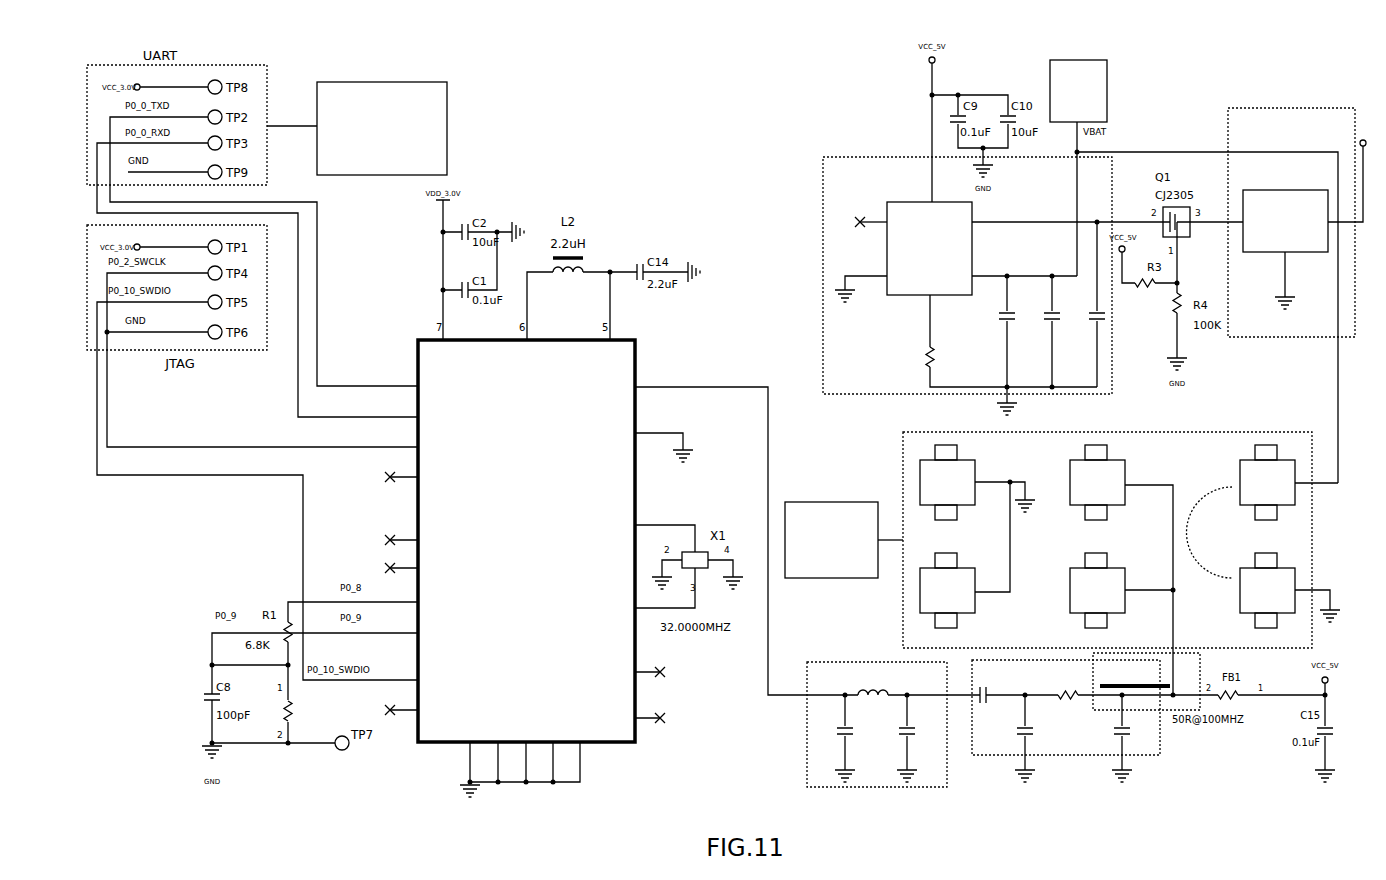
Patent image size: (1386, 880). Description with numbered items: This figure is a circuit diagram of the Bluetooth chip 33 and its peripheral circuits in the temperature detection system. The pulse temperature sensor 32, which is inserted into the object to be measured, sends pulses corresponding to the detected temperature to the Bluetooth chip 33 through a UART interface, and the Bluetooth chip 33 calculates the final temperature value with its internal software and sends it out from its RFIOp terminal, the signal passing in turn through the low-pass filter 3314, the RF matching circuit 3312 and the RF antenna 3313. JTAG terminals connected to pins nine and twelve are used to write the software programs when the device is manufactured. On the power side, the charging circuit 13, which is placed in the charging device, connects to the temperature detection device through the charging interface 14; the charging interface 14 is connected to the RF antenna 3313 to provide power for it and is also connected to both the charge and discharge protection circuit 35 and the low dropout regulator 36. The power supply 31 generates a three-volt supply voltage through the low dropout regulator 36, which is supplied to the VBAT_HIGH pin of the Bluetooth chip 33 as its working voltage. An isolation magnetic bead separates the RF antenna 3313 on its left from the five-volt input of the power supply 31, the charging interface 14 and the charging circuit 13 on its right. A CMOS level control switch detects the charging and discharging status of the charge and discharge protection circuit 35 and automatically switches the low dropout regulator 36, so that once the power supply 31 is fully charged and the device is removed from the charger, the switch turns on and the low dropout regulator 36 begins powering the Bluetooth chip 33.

The pulse temperature sensor 32 is at (387, 90).
The Bluetooth chip 33 is at (525, 567).
The power supply 31 is at (1103, 70).
The charge and discharge protection circuit 35 is at (993, 294).
The low dropout regulator 36 is at (1302, 222).
The charging circuit 13 is at (838, 512).
The charging interface 14 is at (1121, 563).
The RF matching circuit 3312 is at (1086, 745).
The RF antenna 3313 is at (1148, 702).
The low-pass filter 3314 is at (807, 777).